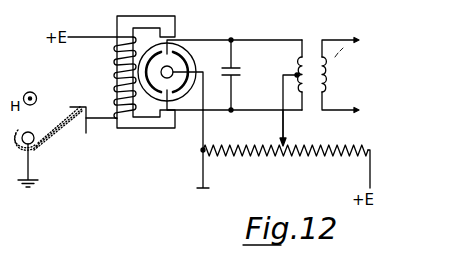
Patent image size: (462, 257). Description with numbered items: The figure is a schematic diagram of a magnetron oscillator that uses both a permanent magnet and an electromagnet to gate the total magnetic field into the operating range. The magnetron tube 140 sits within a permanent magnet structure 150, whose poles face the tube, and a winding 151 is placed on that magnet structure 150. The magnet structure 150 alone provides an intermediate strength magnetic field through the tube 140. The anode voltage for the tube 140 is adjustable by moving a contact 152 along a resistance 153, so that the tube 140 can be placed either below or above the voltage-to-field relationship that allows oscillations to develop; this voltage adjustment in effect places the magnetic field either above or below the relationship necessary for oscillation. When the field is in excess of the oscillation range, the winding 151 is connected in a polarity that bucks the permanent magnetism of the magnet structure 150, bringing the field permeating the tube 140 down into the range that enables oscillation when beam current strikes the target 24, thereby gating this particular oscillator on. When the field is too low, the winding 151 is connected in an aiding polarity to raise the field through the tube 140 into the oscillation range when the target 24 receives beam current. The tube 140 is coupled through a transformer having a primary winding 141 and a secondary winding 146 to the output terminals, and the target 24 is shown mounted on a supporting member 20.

The permanent magnet structure 150 is at (143, 4).
The winding 151 is at (113, 50).
The magnetron tube 140 is at (188, 54).
The transformer primary winding 141 is at (279, 40).
The transformer secondary winding 146 is at (329, 39).
The contact 152 is at (284, 128).
The potentiometer resistor 153 is at (296, 156).
The target 24 is at (87, 128).
The base / pivot member 20 is at (90, 184).